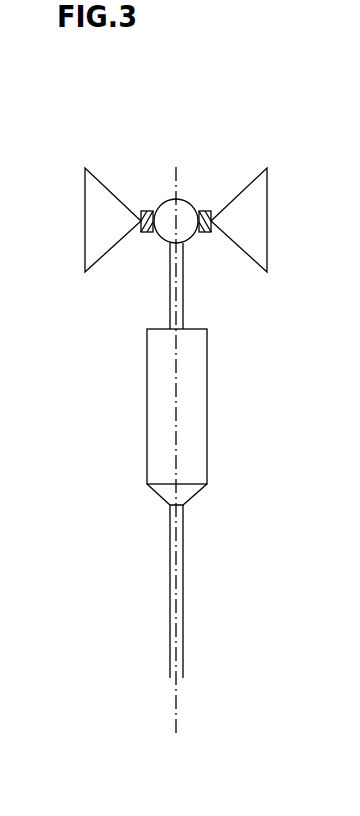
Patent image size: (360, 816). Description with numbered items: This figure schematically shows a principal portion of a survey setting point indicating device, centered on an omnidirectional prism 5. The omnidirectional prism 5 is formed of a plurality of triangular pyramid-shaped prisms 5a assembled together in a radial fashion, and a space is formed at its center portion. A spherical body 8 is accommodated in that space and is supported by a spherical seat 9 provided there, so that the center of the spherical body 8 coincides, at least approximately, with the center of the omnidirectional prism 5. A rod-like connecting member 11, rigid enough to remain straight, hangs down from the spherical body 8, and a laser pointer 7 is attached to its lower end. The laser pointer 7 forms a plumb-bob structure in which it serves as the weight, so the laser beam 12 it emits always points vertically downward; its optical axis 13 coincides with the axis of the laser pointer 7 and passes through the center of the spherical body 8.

The omnidirectional prism 5 is at (82, 227).
The triangular pyramid-shaped prism 5a is at (268, 248).
The laser pointer 7 is at (207, 400).
The spherical body 8 is at (187, 201).
The spherical seat 9 is at (148, 233).
The connecting member 11 is at (187, 302).
The laser beam 12 is at (185, 593).
The optical axis 13 is at (178, 710).